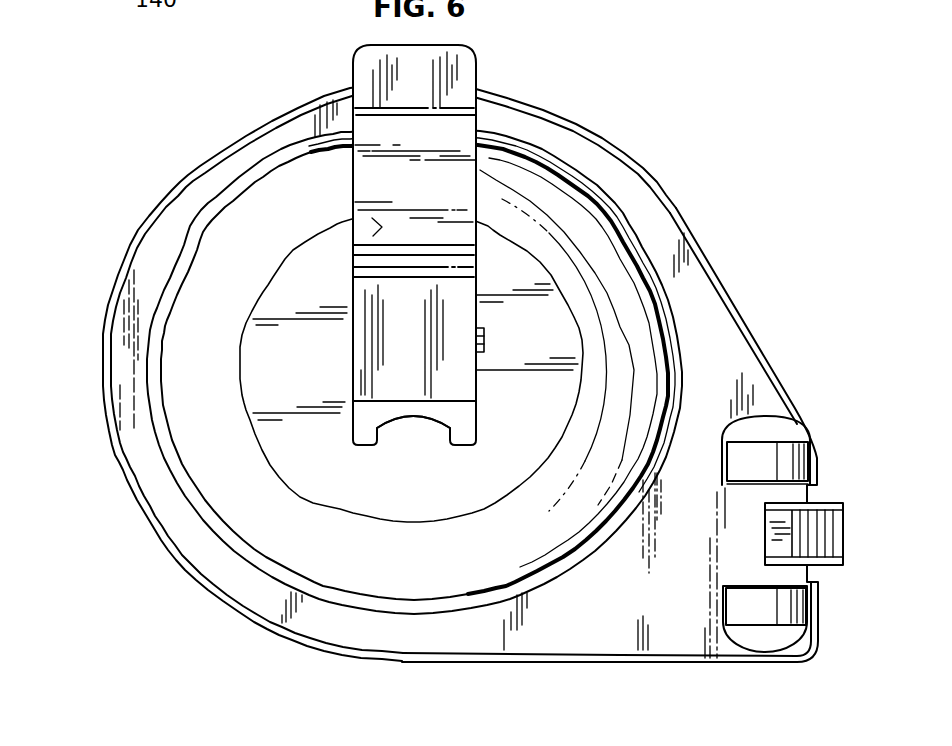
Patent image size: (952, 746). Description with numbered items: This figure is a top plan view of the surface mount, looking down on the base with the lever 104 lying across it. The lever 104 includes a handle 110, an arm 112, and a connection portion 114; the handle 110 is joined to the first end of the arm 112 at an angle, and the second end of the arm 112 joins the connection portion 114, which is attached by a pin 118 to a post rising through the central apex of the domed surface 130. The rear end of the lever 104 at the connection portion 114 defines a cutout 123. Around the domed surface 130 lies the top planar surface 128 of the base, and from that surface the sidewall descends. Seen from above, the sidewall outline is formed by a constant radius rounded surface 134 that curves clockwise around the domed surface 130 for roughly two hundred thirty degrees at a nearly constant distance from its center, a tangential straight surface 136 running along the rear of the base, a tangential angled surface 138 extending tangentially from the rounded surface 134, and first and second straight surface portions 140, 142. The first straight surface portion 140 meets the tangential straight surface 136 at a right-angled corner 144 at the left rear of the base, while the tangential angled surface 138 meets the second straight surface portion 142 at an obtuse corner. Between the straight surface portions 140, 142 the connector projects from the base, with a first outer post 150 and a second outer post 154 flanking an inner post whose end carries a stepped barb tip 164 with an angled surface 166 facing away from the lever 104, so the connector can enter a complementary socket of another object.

The lever 104 is at (370, 225).
The handle 110 is at (477, 70).
The arm 112 is at (476, 133).
The connection portion 114 is at (376, 365).
The pin 118 is at (484, 337).
The cutout 123 is at (406, 430).
The top planar surface 128 is at (729, 367).
The domed surface 130 is at (565, 228).
The constant radius rounded surface 134 is at (121, 265).
The tangential straight surface 136 is at (616, 663).
The tangential angled surface 138 is at (729, 293).
The first straight surface portion 140 is at (817, 621).
The second straight surface portion 142 is at (822, 462).
The right-angled corner 144 is at (812, 655).
The first outer post 150 is at (817, 597).
The second outer post 154 is at (810, 427).
The stepped barb tip 164 is at (782, 508).
The angled surface 166 is at (826, 534).